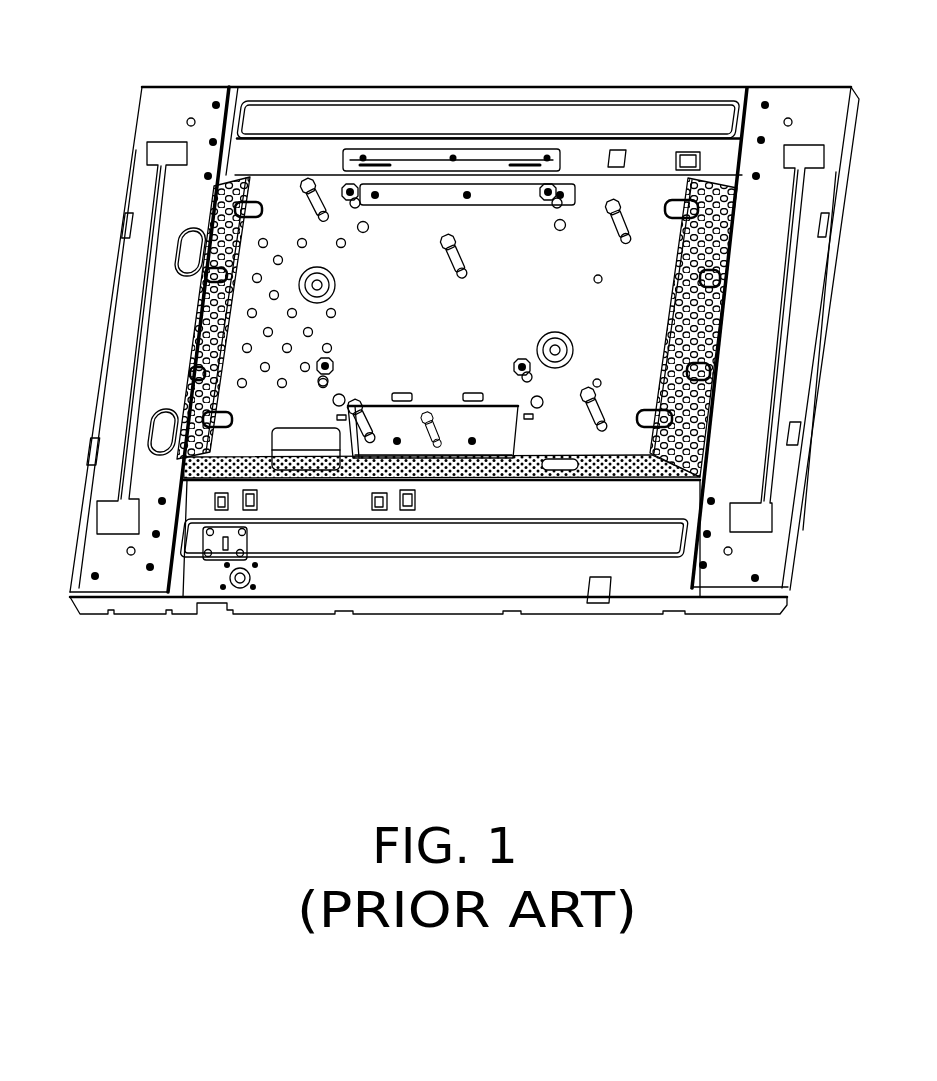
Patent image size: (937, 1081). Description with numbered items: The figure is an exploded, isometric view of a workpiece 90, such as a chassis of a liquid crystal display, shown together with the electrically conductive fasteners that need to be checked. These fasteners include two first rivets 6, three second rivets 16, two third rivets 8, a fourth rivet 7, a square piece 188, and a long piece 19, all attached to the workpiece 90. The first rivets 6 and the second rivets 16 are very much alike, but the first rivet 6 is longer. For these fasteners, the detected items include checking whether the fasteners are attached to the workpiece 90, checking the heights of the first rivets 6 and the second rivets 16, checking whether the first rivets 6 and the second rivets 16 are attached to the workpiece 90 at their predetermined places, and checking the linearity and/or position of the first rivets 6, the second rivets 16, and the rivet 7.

The workpiece 90 is at (166, 80).
The first rivet 6 is at (305, 181).
The third rivet 8 is at (345, 188).
The long piece 19 is at (447, 152).
The second rivet 16 is at (458, 249).
The fourth rivet 7 is at (434, 418).
The square piece 188 is at (248, 538).